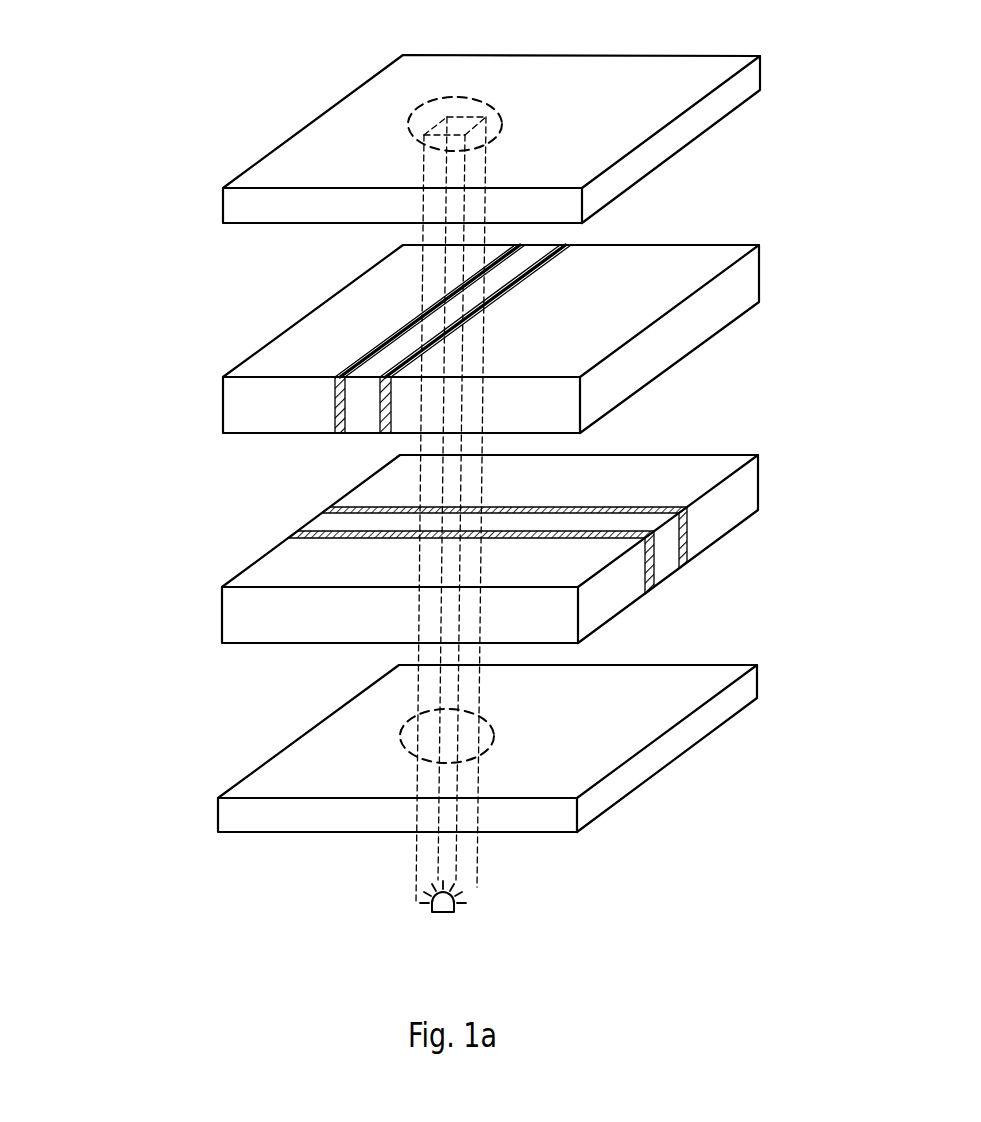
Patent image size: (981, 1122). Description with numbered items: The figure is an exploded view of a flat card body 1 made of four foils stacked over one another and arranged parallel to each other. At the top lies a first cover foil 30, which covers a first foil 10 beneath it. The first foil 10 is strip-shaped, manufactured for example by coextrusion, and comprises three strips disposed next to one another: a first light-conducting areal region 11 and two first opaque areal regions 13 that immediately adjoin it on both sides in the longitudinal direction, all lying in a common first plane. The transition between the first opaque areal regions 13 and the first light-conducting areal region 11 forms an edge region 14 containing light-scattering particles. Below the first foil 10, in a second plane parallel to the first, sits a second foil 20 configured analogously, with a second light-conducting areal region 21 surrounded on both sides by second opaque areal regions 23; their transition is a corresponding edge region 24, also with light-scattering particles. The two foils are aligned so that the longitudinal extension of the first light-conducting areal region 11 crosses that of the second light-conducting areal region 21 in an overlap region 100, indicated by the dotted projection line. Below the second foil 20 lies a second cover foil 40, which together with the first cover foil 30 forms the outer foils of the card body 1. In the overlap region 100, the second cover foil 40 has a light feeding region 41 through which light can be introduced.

The card body 1 is at (150, 77).
The first cover foil 30 is at (262, 115).
The first foil 10 is at (216, 338).
The first light-conducting areal region 11 is at (483, 294).
The first opaque areal regions 13 is at (250, 402).
The edge region 14 is at (374, 440).
The overlap region 100 is at (486, 452).
The second foil 20 is at (212, 570).
The second opaque areal regions 23 is at (373, 495).
The edge region 24 is at (616, 515).
The second light-conducting areal region 21 is at (673, 562).
The second cover foil 40 is at (680, 795).
The light feeding region 41 is at (483, 733).